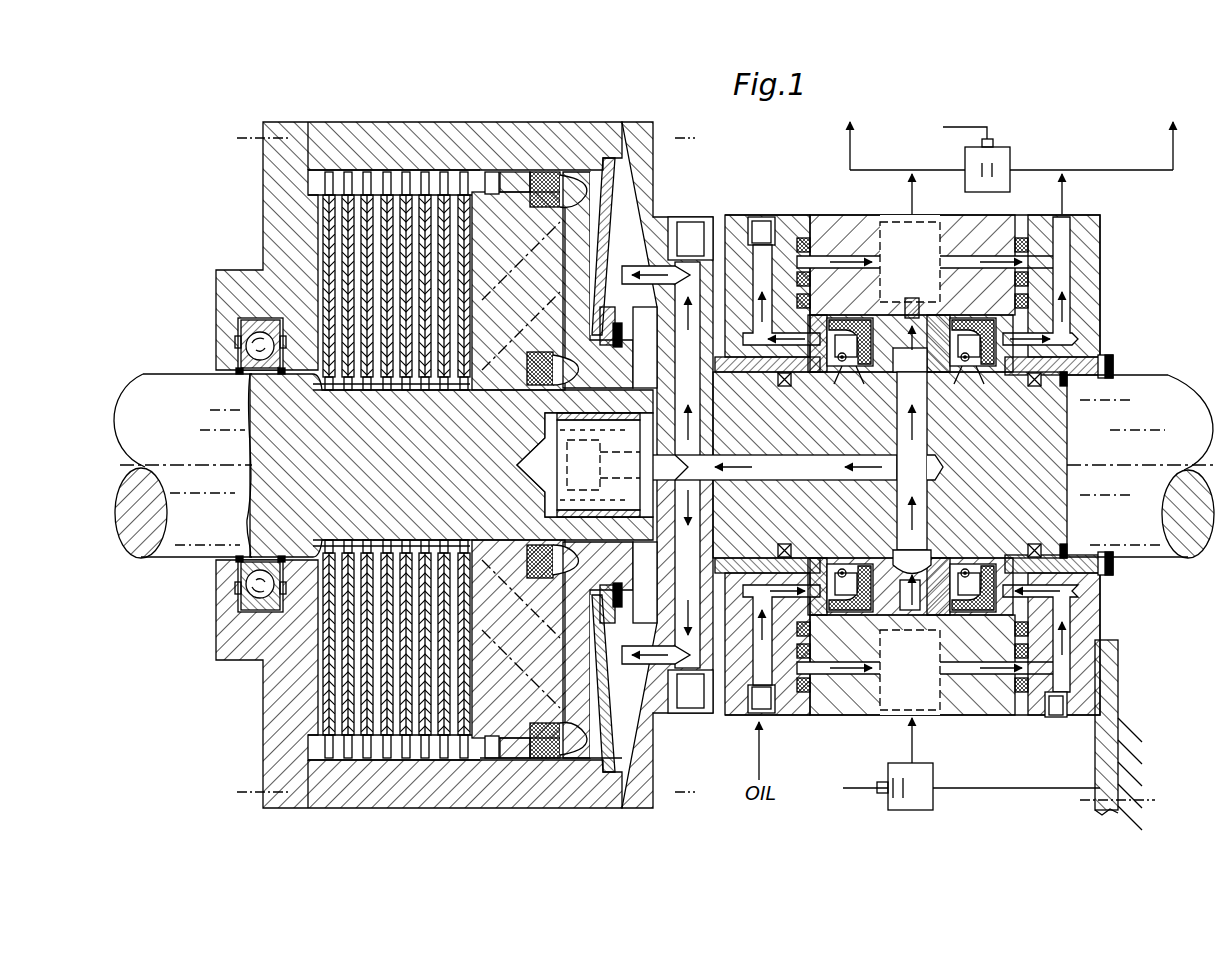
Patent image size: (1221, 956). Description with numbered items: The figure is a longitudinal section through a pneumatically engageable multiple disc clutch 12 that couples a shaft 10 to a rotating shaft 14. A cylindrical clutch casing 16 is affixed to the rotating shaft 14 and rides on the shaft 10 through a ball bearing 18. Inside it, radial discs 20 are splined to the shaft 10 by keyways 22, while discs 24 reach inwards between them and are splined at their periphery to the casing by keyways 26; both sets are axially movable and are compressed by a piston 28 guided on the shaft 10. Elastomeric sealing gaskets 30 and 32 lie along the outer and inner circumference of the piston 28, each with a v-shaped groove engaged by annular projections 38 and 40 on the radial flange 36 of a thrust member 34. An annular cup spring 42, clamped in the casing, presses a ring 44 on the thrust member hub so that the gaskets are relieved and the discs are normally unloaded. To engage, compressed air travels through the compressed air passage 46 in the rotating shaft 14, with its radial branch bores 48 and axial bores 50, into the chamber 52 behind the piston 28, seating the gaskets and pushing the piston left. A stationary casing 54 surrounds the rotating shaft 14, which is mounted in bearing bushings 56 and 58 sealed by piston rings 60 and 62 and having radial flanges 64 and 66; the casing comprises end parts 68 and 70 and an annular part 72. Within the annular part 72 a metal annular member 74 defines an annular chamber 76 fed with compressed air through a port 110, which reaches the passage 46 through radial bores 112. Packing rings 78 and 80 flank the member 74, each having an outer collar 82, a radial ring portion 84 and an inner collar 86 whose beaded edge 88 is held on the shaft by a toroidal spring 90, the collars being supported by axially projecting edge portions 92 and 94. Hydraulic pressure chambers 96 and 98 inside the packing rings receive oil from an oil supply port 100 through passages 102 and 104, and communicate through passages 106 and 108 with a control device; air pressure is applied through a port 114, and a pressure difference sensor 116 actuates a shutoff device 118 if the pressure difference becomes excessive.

The shaft 10 is at (183, 390).
The clutch 12 is at (539, 121).
The rotating shaft 14 is at (1130, 383).
The clutch casing 16 is at (397, 140).
The ball bearing 18 is at (238, 321).
The radial discs 20 is at (342, 390).
The keyways 22 is at (518, 465).
The discs 24 is at (355, 172).
The keyways 26 is at (476, 170).
The piston 28 is at (511, 180).
The sealing gasket 30 is at (553, 170).
The sealing gasket 32 is at (572, 464).
The thrust member 34 is at (626, 356).
The radial flange 36 is at (580, 283).
The annular projection 38 is at (580, 190).
The annular projection 40 is at (565, 375).
The annular cup spring 42 is at (609, 172).
The ring 44 is at (628, 362).
The compressed air passage 46 is at (812, 462).
The radial branch bores 48 is at (692, 432).
The axial bores 50 is at (636, 271).
The chamber 52 is at (590, 756).
The stationary casing 54 is at (1088, 215).
The bearing bushing 56 is at (767, 364).
The bearing bushing 58 is at (1073, 366).
The piston ring 60 is at (890, 465).
The piston ring 62 is at (1065, 400).
The radial flange 64 is at (840, 390).
The radial flange 66 is at (1027, 465).
The casing part 68 is at (736, 228).
The casing part 70 is at (1082, 243).
The annular part 72 is at (982, 233).
The metal annular member 74 is at (948, 451).
The annular chamber 76 is at (927, 468).
The packing ring 78 is at (873, 398).
The packing ring 80 is at (988, 400).
The outer collar 82 is at (825, 453).
The radial ring portion 84 is at (910, 451).
The collar or lip 86 is at (850, 465).
The beaded edge 88 is at (934, 465).
The toroidal spring 90 is at (914, 465).
The axially projecting edge portion 92 is at (894, 352).
The axially projecting edge portion 94 is at (967, 390).
The hydraulic pressure chamber 96 is at (817, 465).
The hydraulic pressure chamber 98 is at (1002, 465).
The oil supply port 100 is at (760, 697).
The passage 102 is at (755, 660).
The passage 104 is at (1060, 632).
The passage 106 is at (832, 252).
The passage 108 is at (1064, 305).
The port 110 is at (908, 697).
The radial bores 112 is at (932, 435).
The port 114 is at (917, 218).
The pressure difference sensor 116 is at (1001, 160).
The shutoff device 118 is at (922, 773).